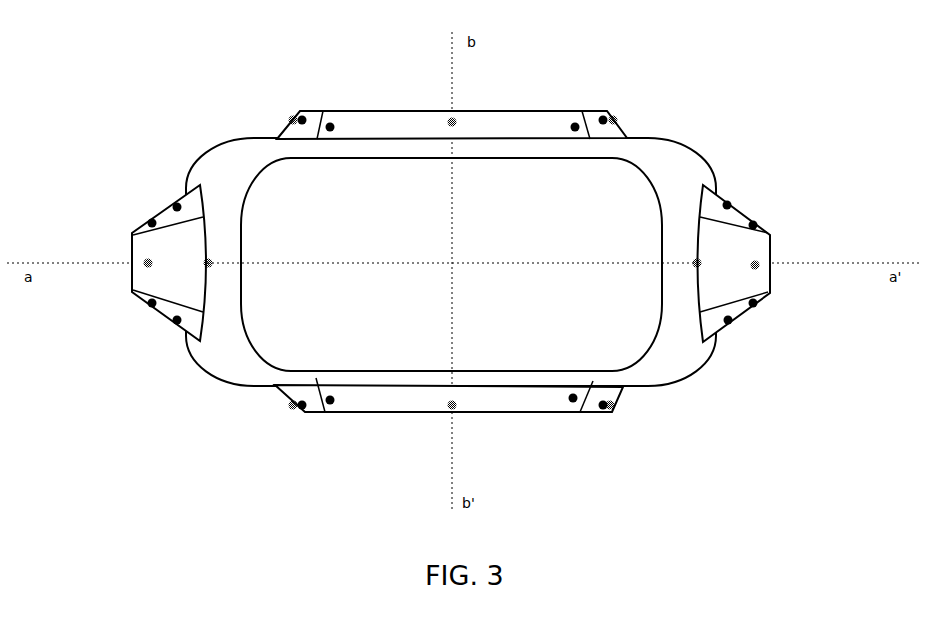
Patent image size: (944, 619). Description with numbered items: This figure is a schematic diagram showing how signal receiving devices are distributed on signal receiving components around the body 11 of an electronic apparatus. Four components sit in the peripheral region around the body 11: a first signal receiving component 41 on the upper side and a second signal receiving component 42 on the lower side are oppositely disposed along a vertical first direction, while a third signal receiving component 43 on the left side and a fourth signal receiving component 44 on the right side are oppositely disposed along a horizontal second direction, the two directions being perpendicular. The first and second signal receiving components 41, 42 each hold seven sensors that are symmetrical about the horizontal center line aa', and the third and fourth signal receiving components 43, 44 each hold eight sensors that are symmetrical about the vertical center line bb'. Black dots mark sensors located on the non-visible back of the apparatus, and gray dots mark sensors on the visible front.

The body 11 is at (683, 160).
The first signal receiving component 41 is at (397, 122).
The second signal receiving component 42 is at (502, 398).
The third signal receiving component 43 is at (172, 242).
The fourth signal receiving component 44 is at (728, 242).